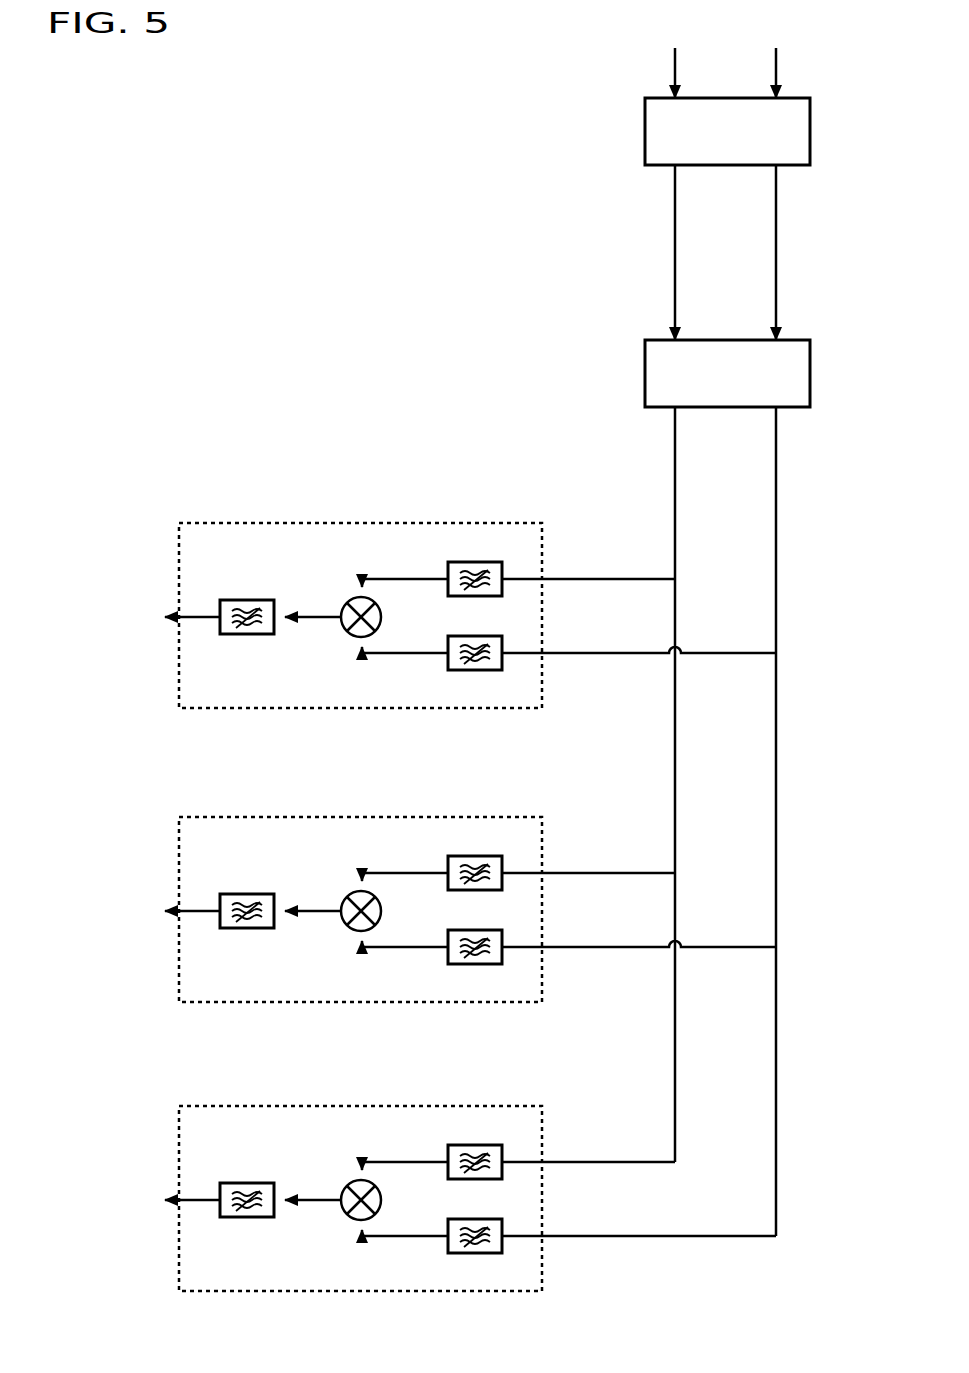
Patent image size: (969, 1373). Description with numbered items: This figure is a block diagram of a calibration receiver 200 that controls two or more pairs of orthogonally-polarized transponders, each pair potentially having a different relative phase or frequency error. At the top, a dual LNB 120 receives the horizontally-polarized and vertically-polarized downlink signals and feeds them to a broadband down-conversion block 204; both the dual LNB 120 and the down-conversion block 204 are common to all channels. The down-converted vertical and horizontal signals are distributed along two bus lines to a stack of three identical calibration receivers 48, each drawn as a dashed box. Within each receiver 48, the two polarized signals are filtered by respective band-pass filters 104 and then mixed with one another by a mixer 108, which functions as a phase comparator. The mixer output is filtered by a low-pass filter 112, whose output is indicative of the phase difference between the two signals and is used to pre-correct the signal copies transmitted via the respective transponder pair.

The calibration receiver 200 is at (150, 361).
The dual LNB 120 is at (645, 137).
The broadband down-conversion block 204 is at (645, 377).
The calibration receiver 48 is at (228, 520).
The band-pass filter 104 is at (449, 595).
The mixer 108 is at (349, 634).
The low-pass filter 112 is at (236, 635).